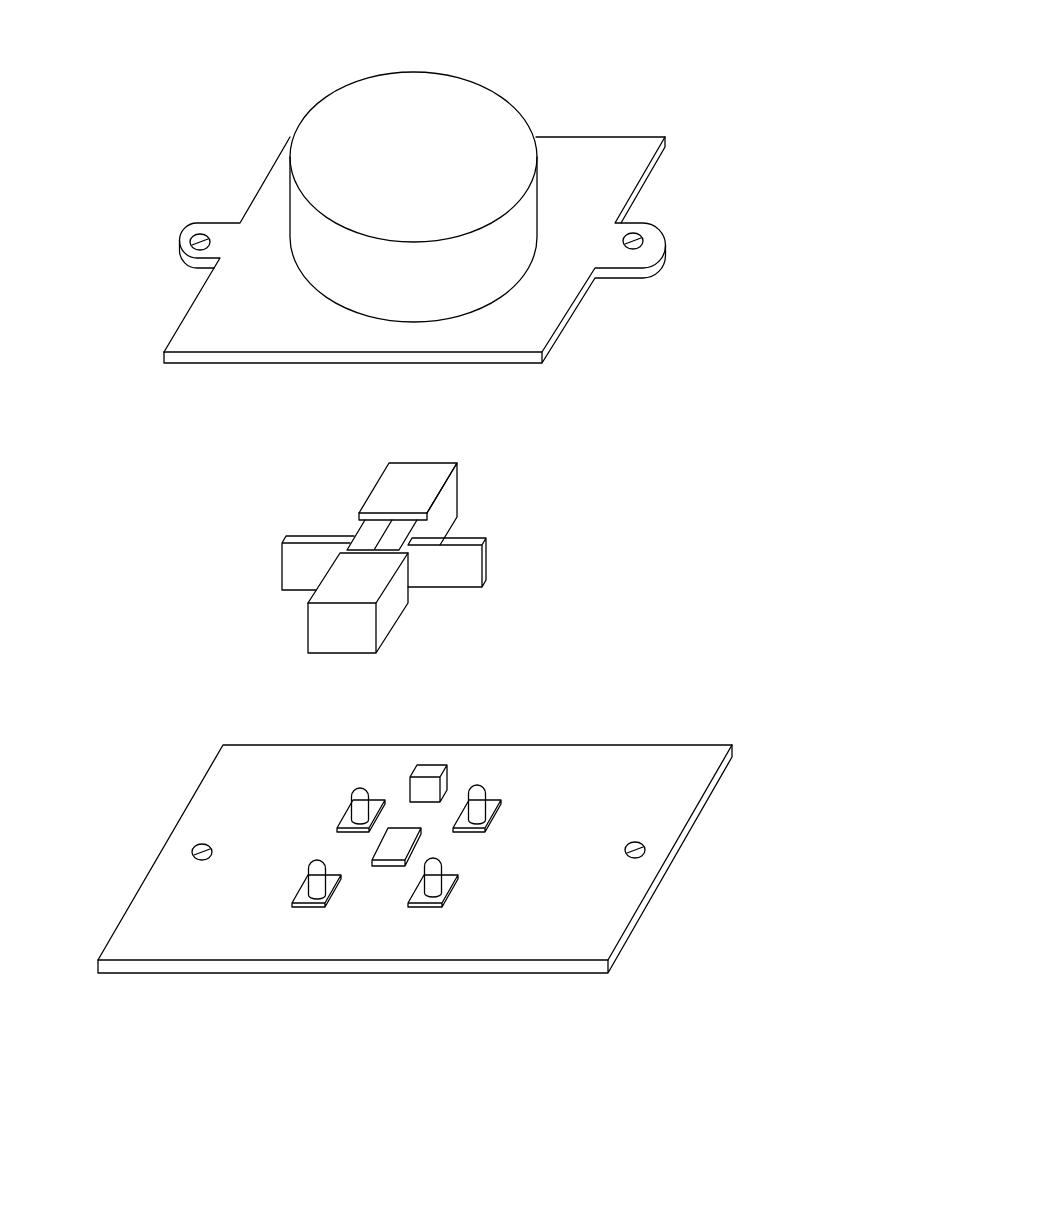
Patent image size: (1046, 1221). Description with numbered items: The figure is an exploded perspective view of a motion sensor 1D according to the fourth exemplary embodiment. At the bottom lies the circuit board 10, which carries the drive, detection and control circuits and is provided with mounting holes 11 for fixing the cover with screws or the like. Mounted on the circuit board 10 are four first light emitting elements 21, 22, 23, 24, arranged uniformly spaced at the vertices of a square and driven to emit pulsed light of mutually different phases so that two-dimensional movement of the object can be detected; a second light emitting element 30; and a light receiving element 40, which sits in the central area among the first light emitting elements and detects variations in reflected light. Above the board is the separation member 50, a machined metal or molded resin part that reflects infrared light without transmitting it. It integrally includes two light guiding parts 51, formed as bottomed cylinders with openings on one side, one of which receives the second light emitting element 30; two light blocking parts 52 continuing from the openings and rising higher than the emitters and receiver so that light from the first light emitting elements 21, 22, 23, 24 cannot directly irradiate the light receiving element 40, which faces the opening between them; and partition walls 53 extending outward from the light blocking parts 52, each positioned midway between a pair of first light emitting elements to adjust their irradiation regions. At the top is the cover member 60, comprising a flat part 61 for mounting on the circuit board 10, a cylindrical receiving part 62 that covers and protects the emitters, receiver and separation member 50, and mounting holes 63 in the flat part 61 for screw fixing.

The motion sensor 1D is at (639, 375).
The circuit board 10 is at (252, 805).
The mounting holes 11 is at (195, 847).
The first light emitting element 21 is at (358, 790).
The first light emitting element 22 is at (478, 790).
The first light emitting element 23 is at (313, 865).
The first light emitting element 24 is at (438, 863).
The second light emitting element 30 is at (427, 770).
The light receiving element 40 is at (395, 847).
The separation member 50 is at (473, 485).
The light guiding parts 51 is at (385, 487).
The light blocking parts 52 is at (355, 530).
The partition walls 53 is at (297, 565).
The cover member 60 is at (590, 110).
The flat part 61 is at (237, 323).
The cylindrical receiving part 62 is at (350, 128).
The mounting holes 63 is at (202, 242).